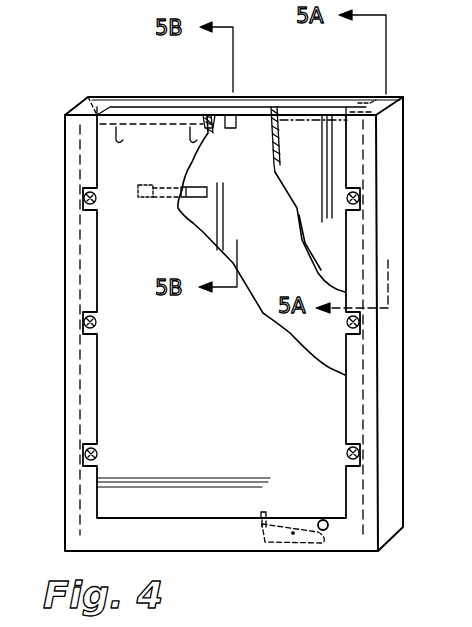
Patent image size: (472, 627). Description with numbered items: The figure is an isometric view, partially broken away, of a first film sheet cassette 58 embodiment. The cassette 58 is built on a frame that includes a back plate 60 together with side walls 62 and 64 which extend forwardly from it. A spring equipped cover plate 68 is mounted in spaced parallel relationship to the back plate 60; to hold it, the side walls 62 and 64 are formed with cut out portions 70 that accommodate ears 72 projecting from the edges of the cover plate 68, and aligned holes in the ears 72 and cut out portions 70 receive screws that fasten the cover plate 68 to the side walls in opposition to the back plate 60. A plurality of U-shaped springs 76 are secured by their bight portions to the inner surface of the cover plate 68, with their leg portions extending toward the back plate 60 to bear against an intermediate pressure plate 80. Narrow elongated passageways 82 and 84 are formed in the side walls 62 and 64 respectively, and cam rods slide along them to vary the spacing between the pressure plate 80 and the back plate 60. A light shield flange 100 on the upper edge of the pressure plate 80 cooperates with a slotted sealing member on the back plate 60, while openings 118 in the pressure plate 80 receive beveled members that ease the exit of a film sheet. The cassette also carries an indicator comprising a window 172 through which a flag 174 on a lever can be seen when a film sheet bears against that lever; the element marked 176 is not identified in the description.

The cassette 58 is at (416, 89).
The back plate 60 is at (182, 97).
The side wall 62 is at (85, 106).
The side wall 64 is at (400, 104).
The cover plate 68 is at (233, 389).
The cut out portion 70 is at (88, 192).
The ear 72 is at (87, 314).
The U-shaped spring 76 is at (235, 177).
The pressure plate 80 is at (287, 231).
The passageway 82 is at (100, 97).
The passageway 84 is at (380, 95).
The flange 100 is at (268, 108).
The opening 118 is at (232, 133).
The window 172 is at (330, 500).
The flag 174 is at (319, 543).
The fastener 176 is at (288, 545).